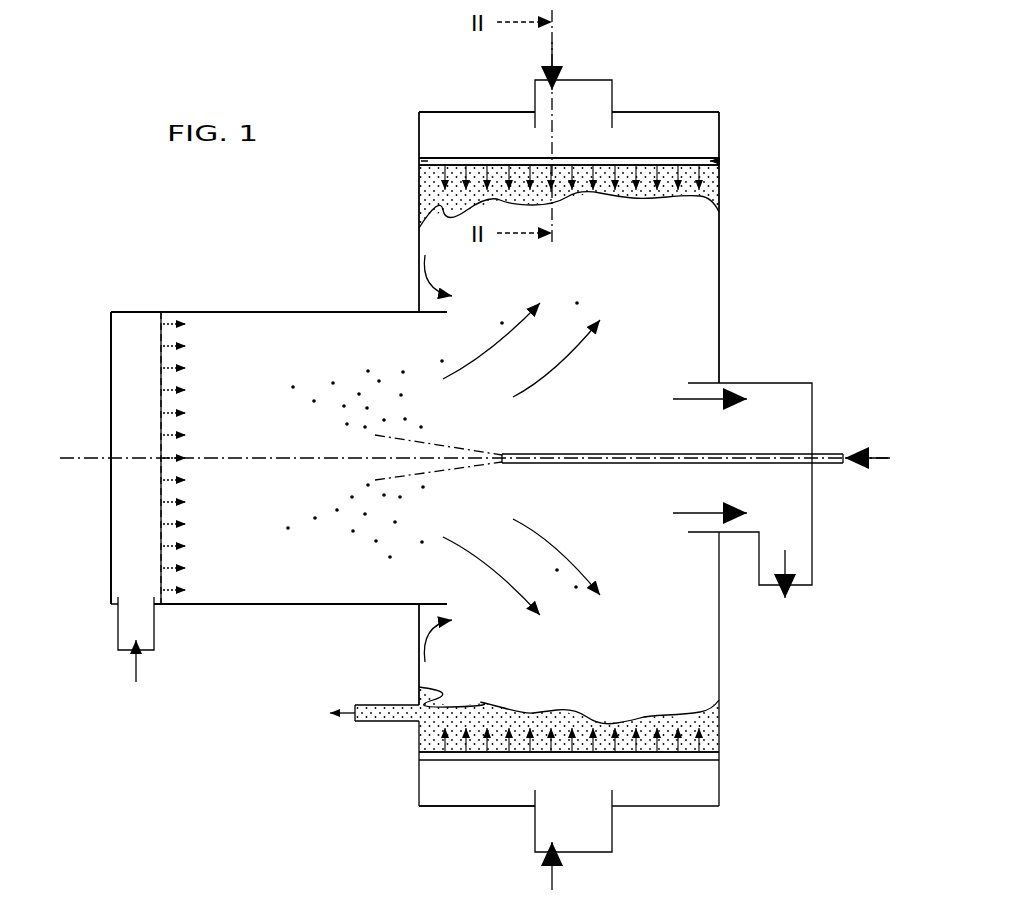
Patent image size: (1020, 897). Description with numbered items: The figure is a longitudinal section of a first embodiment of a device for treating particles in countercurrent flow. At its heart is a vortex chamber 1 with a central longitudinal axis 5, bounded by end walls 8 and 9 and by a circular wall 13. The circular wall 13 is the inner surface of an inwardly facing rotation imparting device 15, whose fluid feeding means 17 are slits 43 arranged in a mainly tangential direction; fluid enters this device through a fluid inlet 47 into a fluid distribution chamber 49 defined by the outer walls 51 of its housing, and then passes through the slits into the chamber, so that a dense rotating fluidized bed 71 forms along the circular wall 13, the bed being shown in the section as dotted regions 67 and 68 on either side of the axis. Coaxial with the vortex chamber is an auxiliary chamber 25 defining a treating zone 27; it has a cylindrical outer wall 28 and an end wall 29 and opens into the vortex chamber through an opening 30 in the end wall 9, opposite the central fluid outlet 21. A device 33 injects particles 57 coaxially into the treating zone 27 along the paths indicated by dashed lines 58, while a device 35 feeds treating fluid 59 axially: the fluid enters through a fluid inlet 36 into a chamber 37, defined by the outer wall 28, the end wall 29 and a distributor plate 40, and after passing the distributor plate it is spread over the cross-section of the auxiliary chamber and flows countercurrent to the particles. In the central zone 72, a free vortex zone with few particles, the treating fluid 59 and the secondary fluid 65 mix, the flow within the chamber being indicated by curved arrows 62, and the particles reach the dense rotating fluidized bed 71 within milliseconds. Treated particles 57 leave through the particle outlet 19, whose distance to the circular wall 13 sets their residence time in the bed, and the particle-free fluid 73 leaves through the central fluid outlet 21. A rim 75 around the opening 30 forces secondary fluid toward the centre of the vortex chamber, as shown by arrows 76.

The vortex chamber 1 is at (652, 645).
The central longitudinal axis 5 is at (260, 462).
The end wall 8 is at (719, 245).
The end wall 9 is at (419, 245).
The circular wall 13 is at (668, 740).
The rotation imparting device 15 is at (419, 125).
The fluid feeding means 17 is at (428, 162).
The particle outlet 19 is at (380, 722).
The central fluid outlet 21 is at (765, 383).
The auxiliary chamber 25 is at (248, 608).
The treating zone 27 is at (335, 447).
The circular outer wall 28 is at (300, 606).
The end wall 29 is at (111, 420).
The opening 30 is at (419, 604).
The device for injecting particles 33 is at (830, 454).
The device for feeding a treating fluid 35 is at (108, 553).
The fluid inlet 36 is at (118, 623).
The chamber 37 is at (137, 325).
The distributor plate 40 is at (160, 378).
The slits 43 is at (716, 163).
The fluid inlet 47 is at (612, 93).
The fluid distribution chamber 49 is at (495, 146).
The outer walls 51 is at (438, 112).
The particles 57 is at (580, 303).
The dashed lines 58 is at (450, 446).
The treating fluid 59 is at (184, 482).
The gas flow path 62 is at (565, 543).
The secondary fluid 65 is at (568, 50).
The upper packed bed 67 is at (617, 180).
The lower packed bed 68 is at (518, 722).
The dense rotating fluidized bed 71 is at (712, 190).
The central zone 72 is at (604, 509).
The fluid 73 is at (697, 405).
The rim 75 is at (438, 604).
The arrows 76 is at (432, 274).